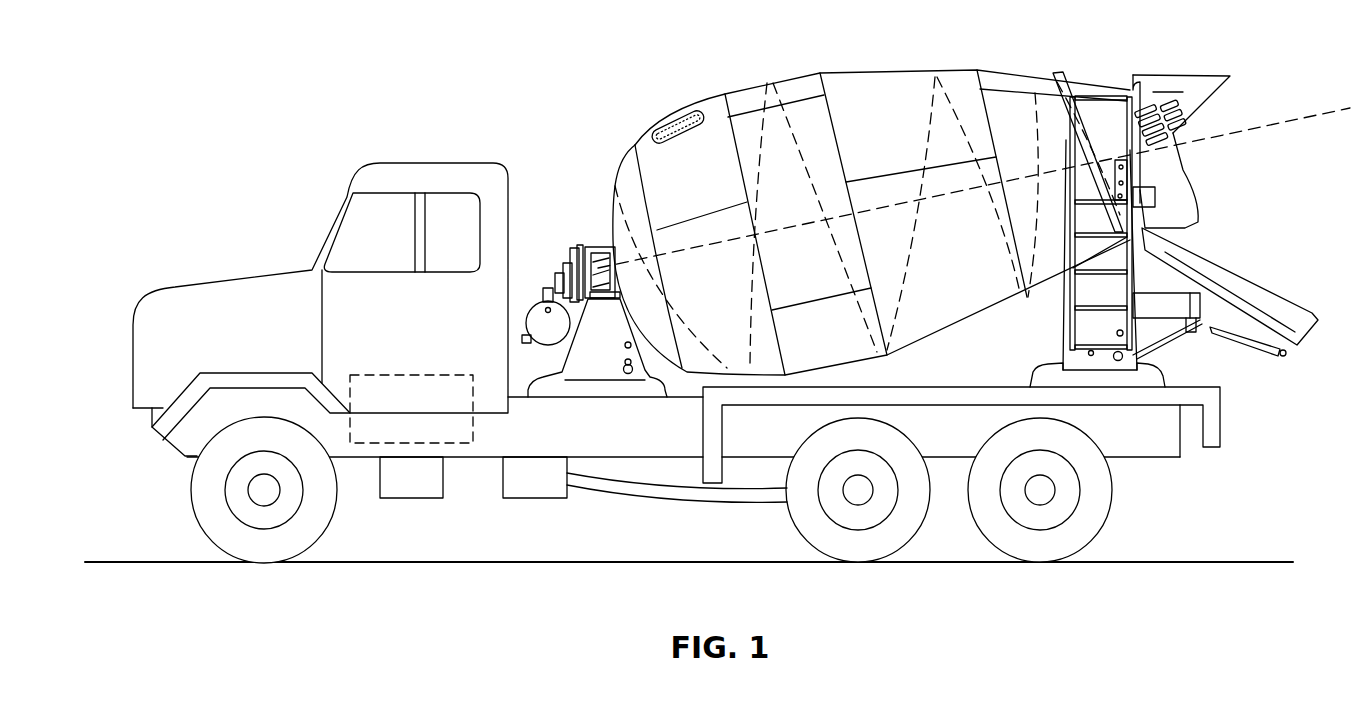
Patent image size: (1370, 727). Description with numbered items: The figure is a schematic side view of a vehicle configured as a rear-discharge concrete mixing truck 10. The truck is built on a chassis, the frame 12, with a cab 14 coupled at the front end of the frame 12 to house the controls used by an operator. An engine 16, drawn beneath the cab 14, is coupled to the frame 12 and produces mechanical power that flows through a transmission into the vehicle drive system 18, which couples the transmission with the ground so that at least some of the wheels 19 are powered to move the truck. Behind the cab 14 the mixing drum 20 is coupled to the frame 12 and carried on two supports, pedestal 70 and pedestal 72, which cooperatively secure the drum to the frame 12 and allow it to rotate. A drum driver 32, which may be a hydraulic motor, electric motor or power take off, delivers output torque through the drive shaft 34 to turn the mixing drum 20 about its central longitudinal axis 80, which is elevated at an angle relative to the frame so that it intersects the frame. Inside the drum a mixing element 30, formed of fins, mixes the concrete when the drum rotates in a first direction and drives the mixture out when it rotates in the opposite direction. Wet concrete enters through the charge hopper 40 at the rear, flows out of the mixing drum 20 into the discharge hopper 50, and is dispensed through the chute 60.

The concrete mixing truck 10 is at (366, 121).
The frame 12 is at (541, 440).
The cab 14 is at (455, 178).
The engine 16 is at (371, 446).
The vehicle drive system 18 is at (498, 602).
The wheels 19 is at (258, 550).
The mixing drum 20 is at (872, 127).
The mixing element 30 is at (893, 66).
The drum driver 32 is at (572, 258).
The drive shaft 34 is at (612, 248).
The charge hopper 40 is at (1180, 73).
The discharge hopper 50 is at (1183, 205).
The chute 60 is at (1267, 309).
The pedestal 70 is at (592, 362).
The pedestal 72 is at (1090, 297).
The longitudinal axis 80 is at (1302, 113).